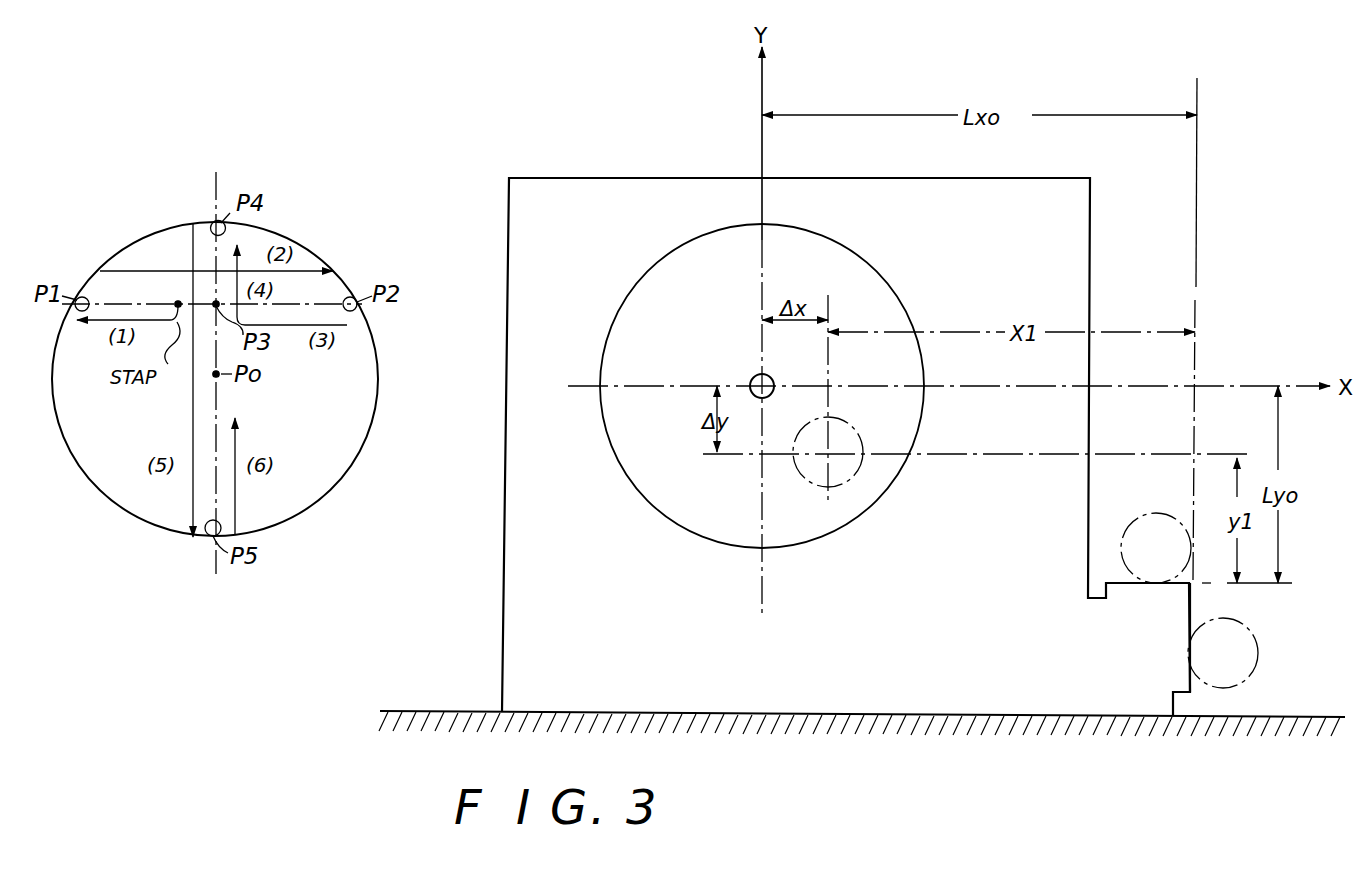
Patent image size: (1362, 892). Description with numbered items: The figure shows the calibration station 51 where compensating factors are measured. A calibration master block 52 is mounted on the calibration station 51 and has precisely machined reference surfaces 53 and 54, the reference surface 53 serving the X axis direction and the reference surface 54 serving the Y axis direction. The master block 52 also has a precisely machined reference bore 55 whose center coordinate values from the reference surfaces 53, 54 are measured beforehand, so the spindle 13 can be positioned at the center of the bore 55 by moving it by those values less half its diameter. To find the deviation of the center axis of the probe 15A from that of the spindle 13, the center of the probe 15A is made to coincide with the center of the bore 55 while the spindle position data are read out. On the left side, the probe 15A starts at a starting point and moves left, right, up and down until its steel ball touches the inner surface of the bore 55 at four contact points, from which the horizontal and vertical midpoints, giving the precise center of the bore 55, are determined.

The spindle 13 is at (858, 468).
The probe 15A is at (752, 377).
The calibration station 51 is at (453, 711).
The calibration master block 52 is at (509, 250).
The reference surface 53 is at (1198, 598).
The reference surface 54 is at (1110, 574).
The reference bore 55 is at (650, 500).